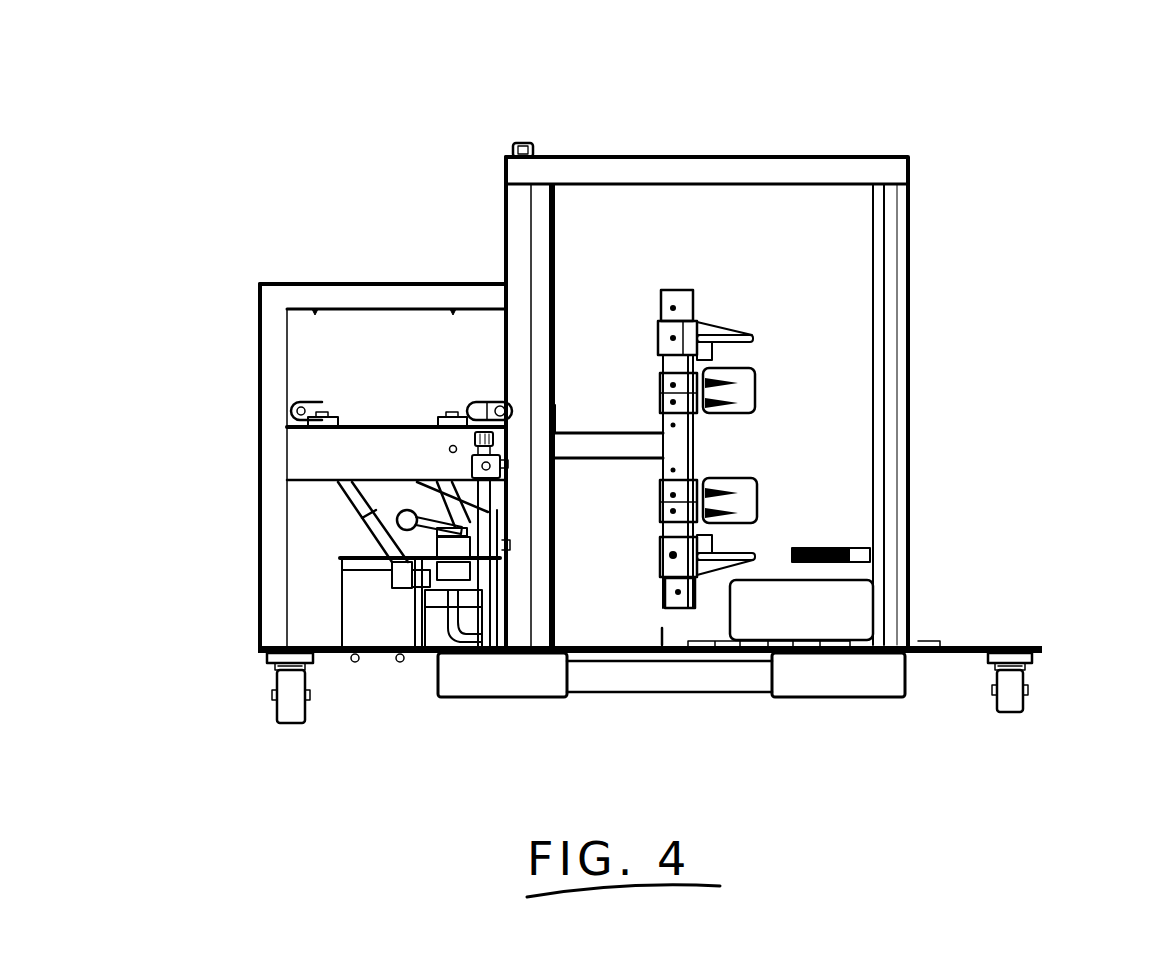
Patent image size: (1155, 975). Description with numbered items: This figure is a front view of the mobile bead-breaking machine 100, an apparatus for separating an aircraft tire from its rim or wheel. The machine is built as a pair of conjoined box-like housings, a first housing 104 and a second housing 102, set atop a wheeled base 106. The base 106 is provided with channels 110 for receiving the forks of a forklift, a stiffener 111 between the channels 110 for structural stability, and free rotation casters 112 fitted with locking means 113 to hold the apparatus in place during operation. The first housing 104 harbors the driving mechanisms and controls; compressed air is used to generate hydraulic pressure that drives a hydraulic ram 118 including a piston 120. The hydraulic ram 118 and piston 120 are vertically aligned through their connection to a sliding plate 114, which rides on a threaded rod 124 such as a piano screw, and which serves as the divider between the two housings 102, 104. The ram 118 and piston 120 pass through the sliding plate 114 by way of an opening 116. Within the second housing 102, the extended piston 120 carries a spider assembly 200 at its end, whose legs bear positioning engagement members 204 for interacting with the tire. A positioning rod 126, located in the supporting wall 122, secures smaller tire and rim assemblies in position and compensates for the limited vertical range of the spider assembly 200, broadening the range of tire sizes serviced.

The mobile bead-breaking machine 100 is at (858, 84).
The second housing 102 is at (643, 168).
The first housing 104 is at (365, 300).
The wheeled base 106 is at (965, 645).
The channels 110 is at (520, 690).
The stiffener 111 is at (685, 690).
The free rotation casters 112 is at (285, 700).
The locking means 113 is at (310, 708).
The sliding plate 114 is at (556, 243).
The opening 116 is at (558, 418).
The hydraulic ram 118 is at (402, 463).
The piston 120 is at (632, 461).
The supporting wall 122 is at (913, 375).
The threaded rod 124 is at (527, 142).
The positioning rod 126 is at (878, 553).
The spider assembly 200 is at (735, 300).
The positioning engagement members 204 is at (758, 343).